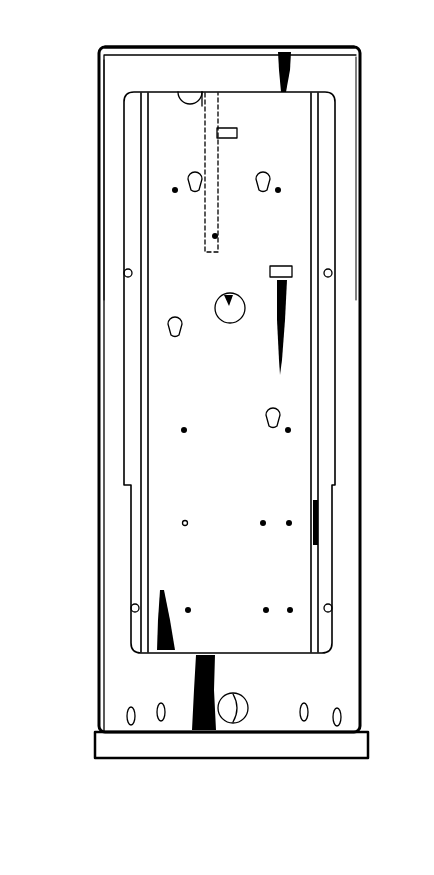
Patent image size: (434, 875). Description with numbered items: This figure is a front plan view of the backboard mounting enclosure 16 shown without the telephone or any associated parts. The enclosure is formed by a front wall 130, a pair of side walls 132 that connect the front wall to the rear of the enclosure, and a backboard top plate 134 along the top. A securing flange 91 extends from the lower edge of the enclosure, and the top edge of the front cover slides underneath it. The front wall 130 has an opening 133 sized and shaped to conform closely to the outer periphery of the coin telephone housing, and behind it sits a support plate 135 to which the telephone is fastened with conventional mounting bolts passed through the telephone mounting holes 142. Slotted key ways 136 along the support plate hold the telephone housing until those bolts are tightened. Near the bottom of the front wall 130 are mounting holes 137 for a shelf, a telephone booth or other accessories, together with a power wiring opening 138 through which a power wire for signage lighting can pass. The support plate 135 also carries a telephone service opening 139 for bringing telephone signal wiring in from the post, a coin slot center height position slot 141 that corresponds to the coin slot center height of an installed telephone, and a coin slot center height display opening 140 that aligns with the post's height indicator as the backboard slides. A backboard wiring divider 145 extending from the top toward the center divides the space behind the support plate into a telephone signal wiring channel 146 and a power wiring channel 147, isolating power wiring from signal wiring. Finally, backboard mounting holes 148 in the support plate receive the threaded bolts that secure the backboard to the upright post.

The backboard mounting enclosure 16 is at (74, 333).
The securing flange 91 is at (96, 740).
The front wall 130 is at (113, 478).
The side walls 132 is at (362, 407).
The opening 133 is at (178, 542).
The backboard top plate 134 is at (240, 47).
The support plate 135 is at (162, 393).
The slotted key ways 136 is at (268, 410).
The mounting holes 137 is at (161, 704).
The power wiring opening 138 is at (246, 697).
The telephone service opening 139 is at (228, 296).
The coin slot center height display opening 140 is at (283, 266).
The coin slot center height position slot 141 is at (237, 133).
The telephone mounting holes 142 is at (175, 190).
The backboard wiring divider 145 is at (214, 237).
The backboard telephone signal wiring channel 146 is at (297, 166).
The backboard power wiring channel 147 is at (157, 182).
The backboard mounting holes 148 is at (128, 269).